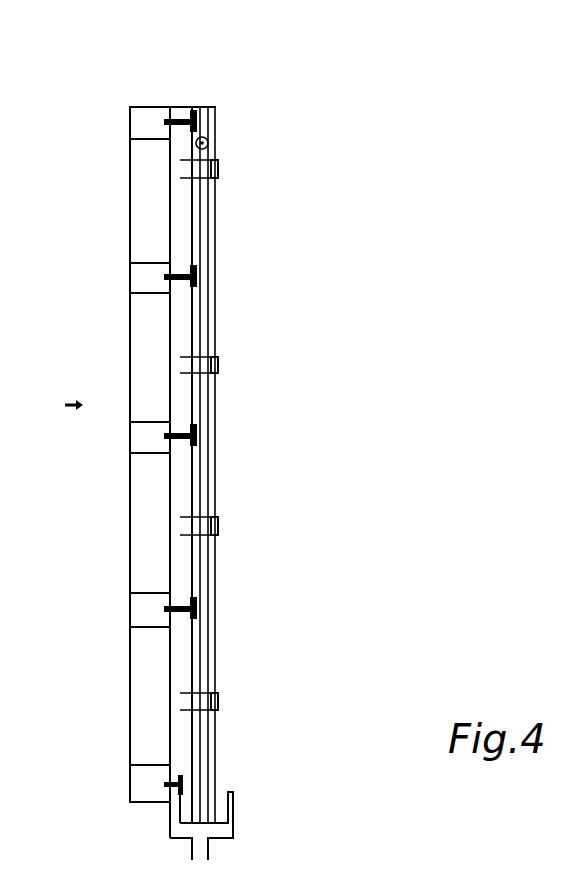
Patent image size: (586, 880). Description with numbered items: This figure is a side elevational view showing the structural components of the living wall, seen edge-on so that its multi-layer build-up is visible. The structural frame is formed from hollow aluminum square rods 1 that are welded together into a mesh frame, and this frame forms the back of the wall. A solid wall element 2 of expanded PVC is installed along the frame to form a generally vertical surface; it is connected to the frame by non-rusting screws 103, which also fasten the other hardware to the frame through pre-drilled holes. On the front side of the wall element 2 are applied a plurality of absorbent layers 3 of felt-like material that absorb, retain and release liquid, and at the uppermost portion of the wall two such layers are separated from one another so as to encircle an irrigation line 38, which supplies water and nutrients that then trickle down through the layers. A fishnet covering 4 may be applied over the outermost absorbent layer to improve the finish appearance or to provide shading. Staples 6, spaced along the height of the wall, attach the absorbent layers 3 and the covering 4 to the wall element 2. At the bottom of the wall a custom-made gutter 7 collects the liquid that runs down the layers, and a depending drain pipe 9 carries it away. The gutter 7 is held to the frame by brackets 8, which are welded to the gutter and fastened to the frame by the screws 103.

The rods 1 is at (148, 102).
The solid wall element 2 is at (182, 102).
The absorbent layers 3 is at (201, 218).
The fishnet covering 4 is at (220, 456).
The irrigation line 38 is at (208, 142).
The screws 103 is at (200, 597).
The staples 6 is at (222, 700).
The gutter 7 is at (240, 818).
The drain pipe 9 is at (210, 855).
The brackets 8 is at (170, 773).